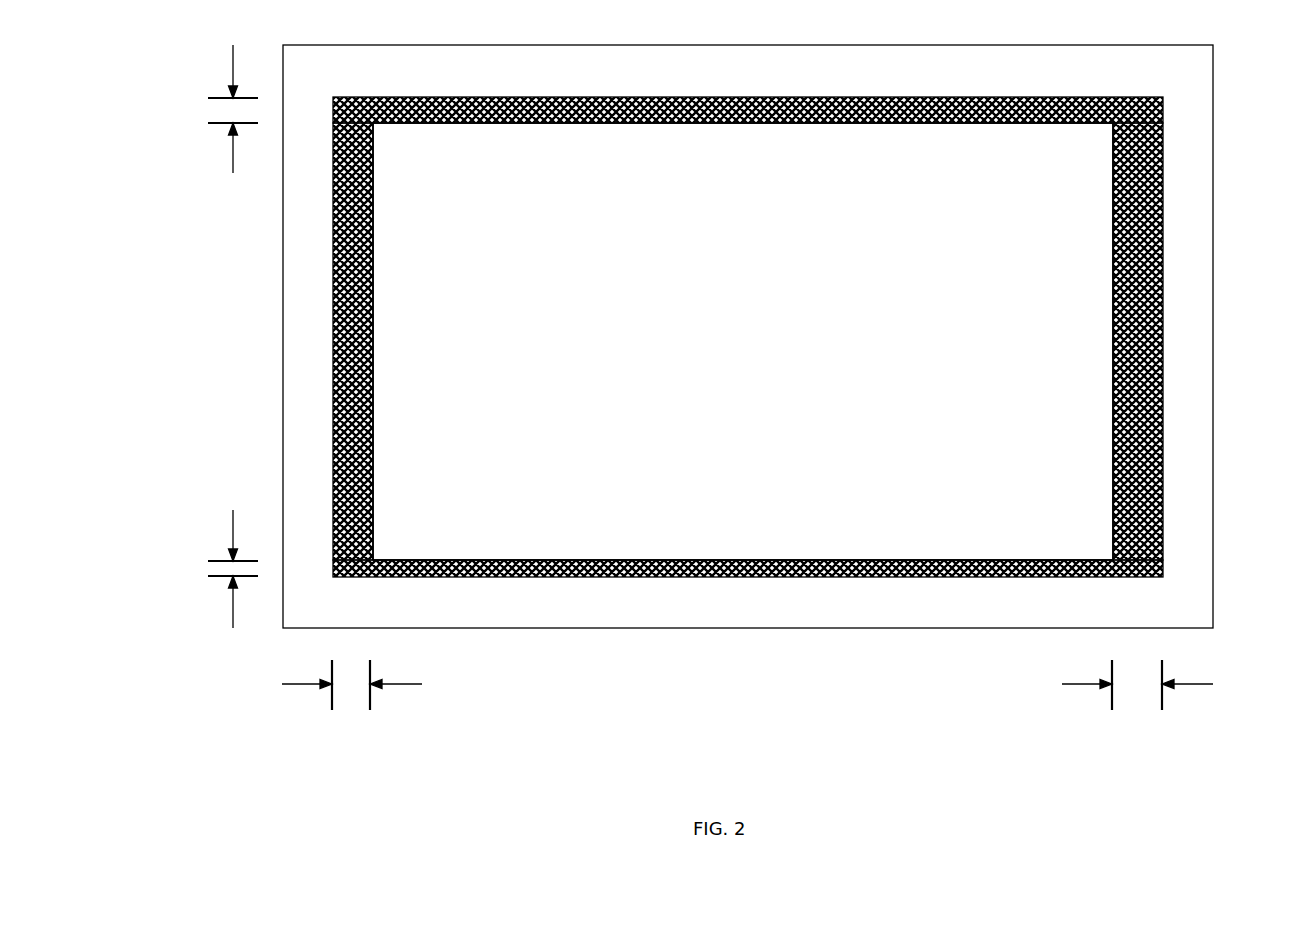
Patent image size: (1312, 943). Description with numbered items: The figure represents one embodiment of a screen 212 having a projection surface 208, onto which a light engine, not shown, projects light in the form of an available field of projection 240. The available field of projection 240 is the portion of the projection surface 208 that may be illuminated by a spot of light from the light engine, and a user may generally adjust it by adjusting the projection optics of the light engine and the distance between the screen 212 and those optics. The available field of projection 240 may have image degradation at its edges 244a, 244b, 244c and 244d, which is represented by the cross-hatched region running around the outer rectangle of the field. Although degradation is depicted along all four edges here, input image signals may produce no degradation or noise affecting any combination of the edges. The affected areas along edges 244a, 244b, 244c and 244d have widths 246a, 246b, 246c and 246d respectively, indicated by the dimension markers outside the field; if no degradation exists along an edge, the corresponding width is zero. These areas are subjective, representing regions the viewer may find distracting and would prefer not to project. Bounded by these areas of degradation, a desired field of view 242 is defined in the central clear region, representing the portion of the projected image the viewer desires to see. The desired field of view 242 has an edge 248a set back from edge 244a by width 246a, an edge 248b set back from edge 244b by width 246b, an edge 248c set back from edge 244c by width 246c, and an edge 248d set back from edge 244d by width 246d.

The projection surface 208 is at (748, 362).
The screen 212 is at (748, 362).
The available field of projection 240 is at (558, 595).
The desired field of view 242 is at (759, 352).
The edge 244a is at (748, 113).
The edge 244b is at (748, 582).
The edge 244c is at (350, 341).
The edge 244d is at (1139, 341).
The width 246a is at (208, 110).
The width 246b is at (205, 568).
The width 246c is at (350, 712).
The width 246d is at (1135, 712).
The edge 248a is at (492, 123).
The edge 248b is at (1035, 558).
The edge 248c is at (373, 355).
The edge 248d is at (1113, 257).